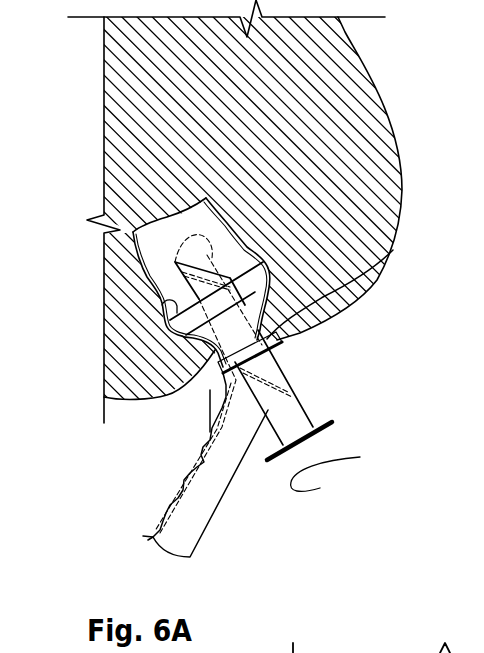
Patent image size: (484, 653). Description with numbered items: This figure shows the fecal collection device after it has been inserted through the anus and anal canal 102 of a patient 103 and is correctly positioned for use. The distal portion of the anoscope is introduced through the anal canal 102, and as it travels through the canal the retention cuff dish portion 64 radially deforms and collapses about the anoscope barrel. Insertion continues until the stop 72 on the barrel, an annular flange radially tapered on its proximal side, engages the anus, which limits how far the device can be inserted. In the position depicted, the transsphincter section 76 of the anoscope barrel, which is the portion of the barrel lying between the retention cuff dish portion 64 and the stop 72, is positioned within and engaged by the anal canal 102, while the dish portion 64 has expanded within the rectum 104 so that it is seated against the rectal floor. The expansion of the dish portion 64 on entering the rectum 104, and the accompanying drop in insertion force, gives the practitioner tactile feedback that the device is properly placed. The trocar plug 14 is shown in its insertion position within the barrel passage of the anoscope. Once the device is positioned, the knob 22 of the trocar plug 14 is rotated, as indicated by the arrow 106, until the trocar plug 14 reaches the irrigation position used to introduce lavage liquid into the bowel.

The patient 103 is at (398, 153).
The transsphincter section 76 is at (393, 249).
The rectum 104 is at (164, 277).
The dish portion 64 is at (162, 301).
The anal canal 102 is at (212, 344).
The stop 72 is at (268, 360).
The trocar plug 14 is at (318, 404).
The knob 22 is at (330, 422).
The arrow 106 is at (345, 470).